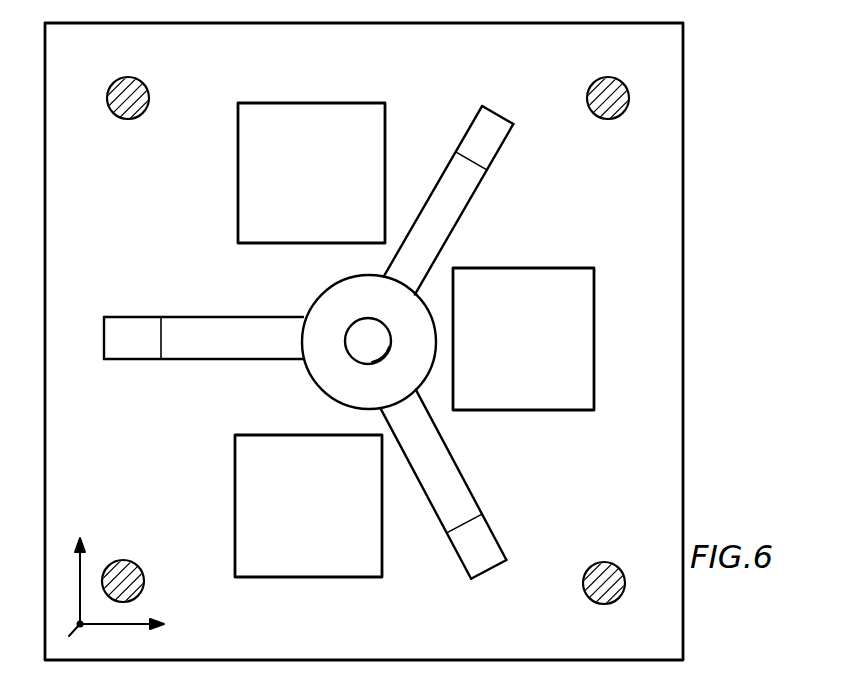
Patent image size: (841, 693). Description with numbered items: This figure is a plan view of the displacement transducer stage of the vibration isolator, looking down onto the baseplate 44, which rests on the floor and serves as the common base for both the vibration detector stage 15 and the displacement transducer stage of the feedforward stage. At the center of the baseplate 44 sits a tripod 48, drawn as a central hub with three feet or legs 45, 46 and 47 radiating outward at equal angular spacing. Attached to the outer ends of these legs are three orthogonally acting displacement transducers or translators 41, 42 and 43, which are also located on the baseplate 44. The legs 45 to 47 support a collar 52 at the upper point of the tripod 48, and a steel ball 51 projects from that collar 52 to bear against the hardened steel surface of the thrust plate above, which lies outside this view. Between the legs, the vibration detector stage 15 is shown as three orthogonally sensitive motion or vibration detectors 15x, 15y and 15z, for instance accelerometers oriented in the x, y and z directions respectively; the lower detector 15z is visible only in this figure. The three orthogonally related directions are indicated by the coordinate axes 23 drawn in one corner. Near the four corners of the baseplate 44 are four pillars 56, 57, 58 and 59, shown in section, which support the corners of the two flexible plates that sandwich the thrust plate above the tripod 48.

The vibration detector stage 15 is at (492, 340).
The vibration detector 15x is at (327, 535).
The vibration detector 15y is at (531, 365).
The vibration detector 15z is at (320, 187).
The three orthogonally related directions 23 is at (80, 594).
The displacement transducer 41 is at (135, 322).
The displacement transducer 42 is at (490, 530).
The displacement transducer 43 is at (497, 150).
The baseplate 44 is at (171, 214).
The tripod leg 45 is at (203, 336).
The tripod leg 46 is at (465, 484).
The tripod leg 47 is at (467, 200).
The tripod 48 is at (346, 345).
The steel ball 51 is at (355, 341).
The collar 52 is at (319, 296).
The pillar 56 is at (137, 565).
The pillar 57 is at (599, 563).
The pillar 58 is at (591, 88).
The pillar 59 is at (148, 97).